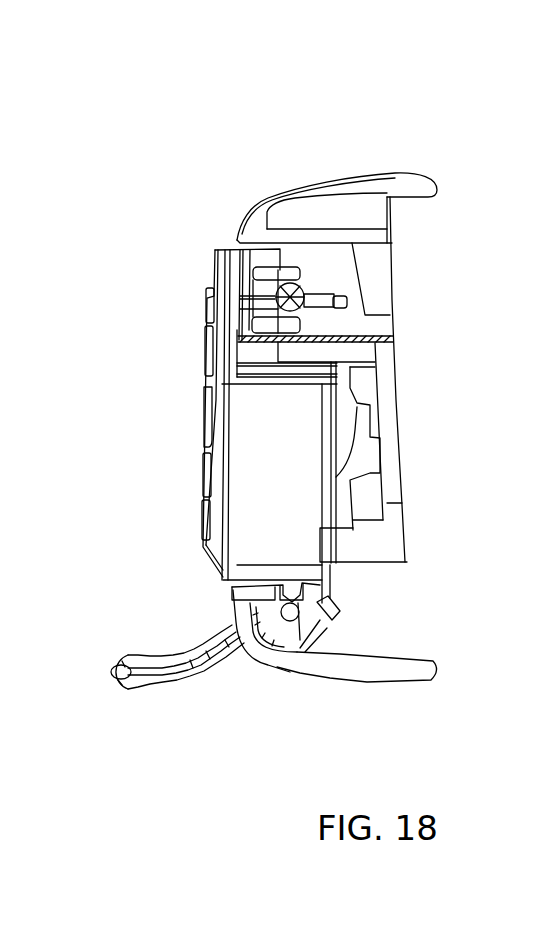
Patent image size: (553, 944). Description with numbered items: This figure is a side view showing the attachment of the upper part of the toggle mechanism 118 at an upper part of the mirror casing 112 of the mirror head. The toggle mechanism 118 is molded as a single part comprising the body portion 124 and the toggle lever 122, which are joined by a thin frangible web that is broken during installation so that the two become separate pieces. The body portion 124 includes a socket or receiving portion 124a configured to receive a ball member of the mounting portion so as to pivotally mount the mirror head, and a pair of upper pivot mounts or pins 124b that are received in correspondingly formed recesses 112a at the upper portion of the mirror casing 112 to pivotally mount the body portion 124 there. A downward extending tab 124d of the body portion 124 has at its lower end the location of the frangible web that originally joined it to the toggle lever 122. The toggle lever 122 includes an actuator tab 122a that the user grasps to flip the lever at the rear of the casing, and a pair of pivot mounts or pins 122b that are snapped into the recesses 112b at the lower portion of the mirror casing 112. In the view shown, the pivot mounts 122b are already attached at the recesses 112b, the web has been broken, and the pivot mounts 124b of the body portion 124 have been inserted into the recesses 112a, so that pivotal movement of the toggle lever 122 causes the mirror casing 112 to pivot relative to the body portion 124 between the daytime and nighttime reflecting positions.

The toggle mechanism 118 is at (191, 206).
The mirror casing 112 is at (357, 178).
The receiving portions or recesses 112a is at (308, 292).
The receiving portions or recesses 112b is at (283, 602).
The body portion 124 is at (190, 457).
The socket or receiving portion 124a is at (203, 348).
The upper pivot mounts or bosses or pins 124b is at (292, 288).
The downward extending tab 124d is at (340, 612).
The toggle lever 122 is at (225, 689).
The actuator portion or tab 122a is at (132, 689).
The pivot mounts or bosses or pins 122b is at (290, 621).